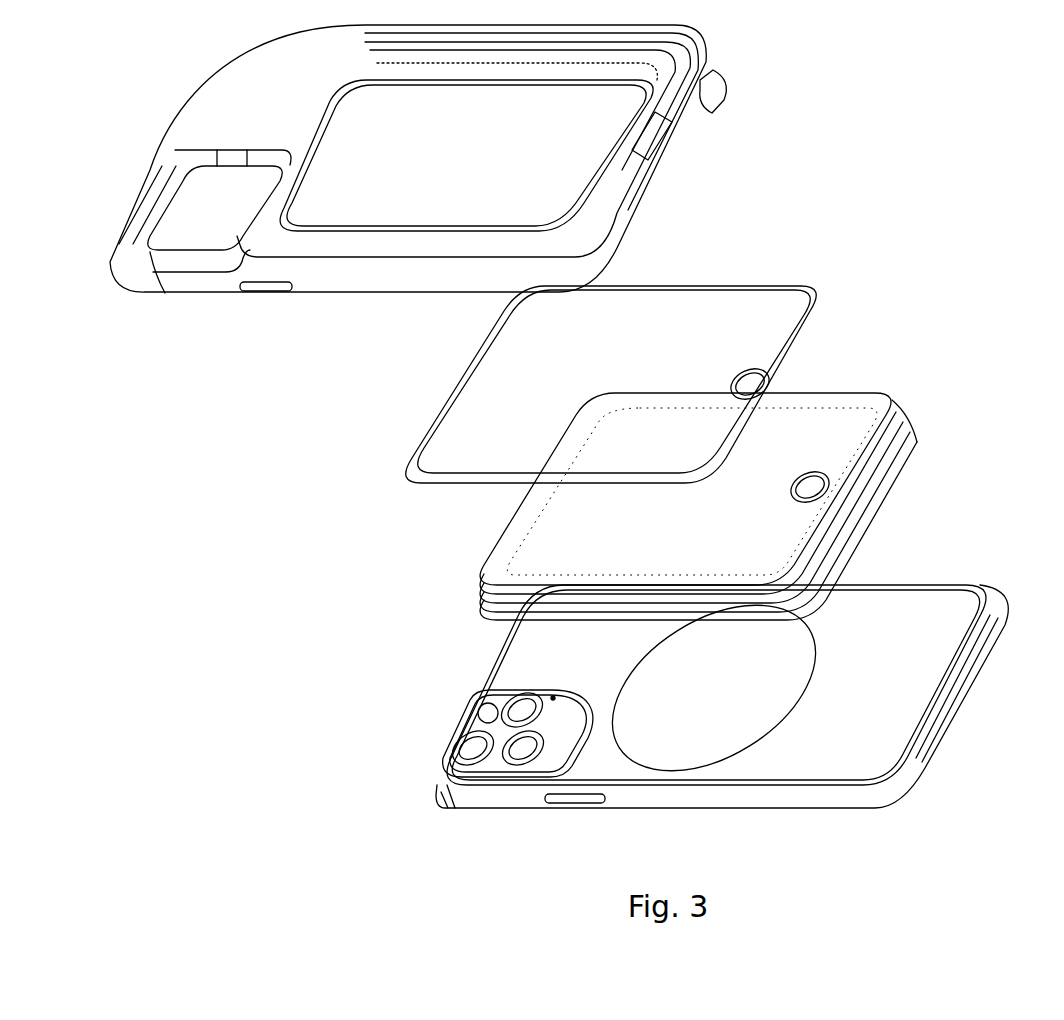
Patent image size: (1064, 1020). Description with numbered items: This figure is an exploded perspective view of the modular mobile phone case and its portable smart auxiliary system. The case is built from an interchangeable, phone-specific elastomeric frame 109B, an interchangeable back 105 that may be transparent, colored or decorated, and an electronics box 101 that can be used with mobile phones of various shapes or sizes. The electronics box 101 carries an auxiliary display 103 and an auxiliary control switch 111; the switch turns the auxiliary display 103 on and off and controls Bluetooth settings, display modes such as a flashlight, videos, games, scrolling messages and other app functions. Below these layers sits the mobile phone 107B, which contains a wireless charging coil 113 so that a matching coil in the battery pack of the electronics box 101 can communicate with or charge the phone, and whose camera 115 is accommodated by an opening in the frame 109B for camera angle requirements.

The elastomeric frame 109B is at (418, 159).
The interchangeable back 105 is at (611, 384).
The electronics box 101 is at (796, 393).
The auxiliary display 103 is at (691, 491).
The auxiliary control switch 111 is at (830, 477).
The mobile phone 107B is at (722, 696).
The wireless charging coil 113 is at (677, 630).
The camera 115 is at (445, 733).